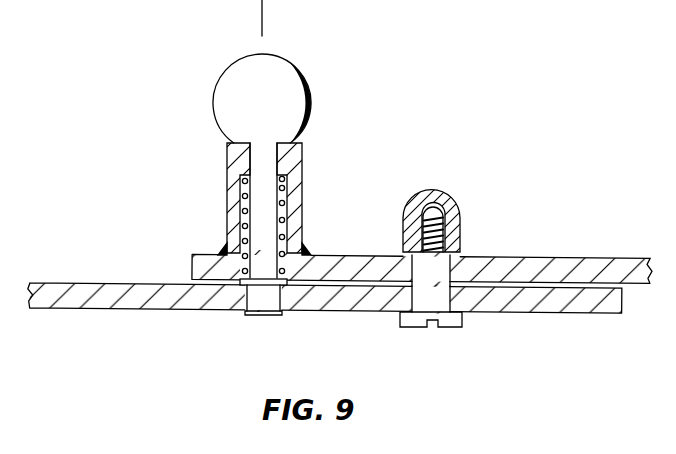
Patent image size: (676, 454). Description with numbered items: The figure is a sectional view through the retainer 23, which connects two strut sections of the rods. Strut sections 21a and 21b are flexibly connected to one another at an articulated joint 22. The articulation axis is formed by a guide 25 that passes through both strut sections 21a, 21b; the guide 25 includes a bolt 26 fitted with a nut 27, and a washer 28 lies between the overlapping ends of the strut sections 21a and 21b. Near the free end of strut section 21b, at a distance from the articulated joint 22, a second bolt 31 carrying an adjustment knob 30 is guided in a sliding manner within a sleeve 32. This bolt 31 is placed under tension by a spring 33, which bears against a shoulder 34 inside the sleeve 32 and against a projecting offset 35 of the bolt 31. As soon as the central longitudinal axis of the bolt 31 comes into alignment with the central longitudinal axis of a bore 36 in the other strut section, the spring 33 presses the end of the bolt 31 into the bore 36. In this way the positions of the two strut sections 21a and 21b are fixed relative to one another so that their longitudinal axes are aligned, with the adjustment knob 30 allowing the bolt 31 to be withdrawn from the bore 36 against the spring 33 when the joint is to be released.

The strut section 21a is at (143, 302).
The strut section 21b is at (582, 257).
The articulated joint 22 is at (427, 290).
The retainer 23 is at (257, 316).
The guide 25 is at (440, 302).
The bolt 26 is at (445, 233).
The nut 27 is at (443, 198).
The washer 28 is at (477, 289).
The adjustment knob 30 is at (298, 77).
The bolt 31 is at (268, 163).
The sleeve 32 is at (293, 207).
The spring 33 is at (245, 210).
The shoulder 34 is at (242, 173).
The projecting offset 35 is at (240, 297).
The bore 36 is at (288, 312).